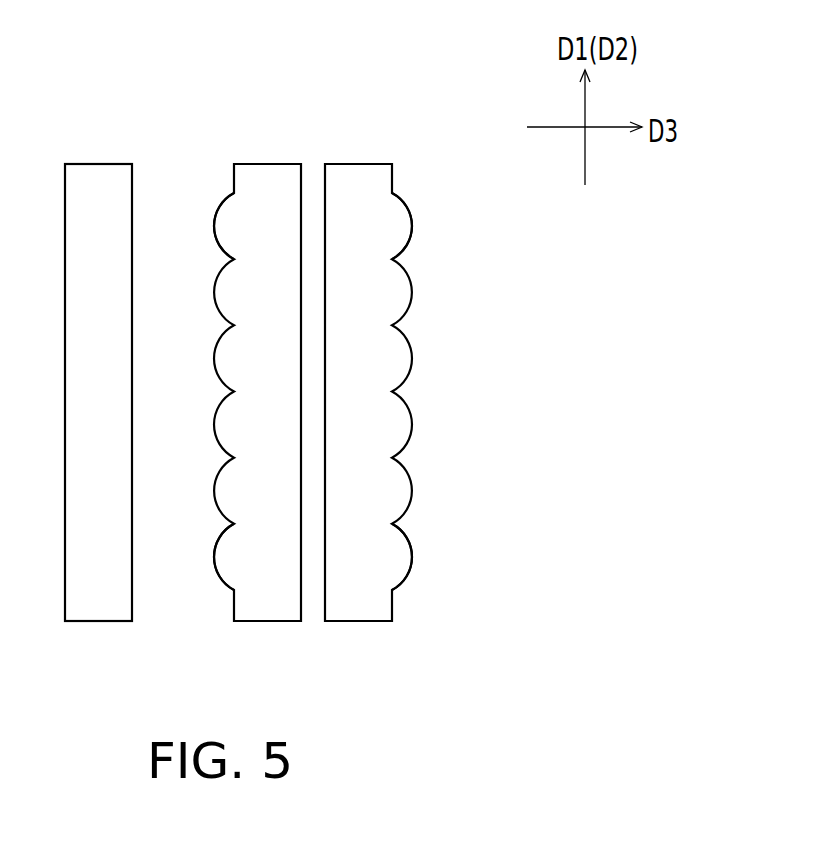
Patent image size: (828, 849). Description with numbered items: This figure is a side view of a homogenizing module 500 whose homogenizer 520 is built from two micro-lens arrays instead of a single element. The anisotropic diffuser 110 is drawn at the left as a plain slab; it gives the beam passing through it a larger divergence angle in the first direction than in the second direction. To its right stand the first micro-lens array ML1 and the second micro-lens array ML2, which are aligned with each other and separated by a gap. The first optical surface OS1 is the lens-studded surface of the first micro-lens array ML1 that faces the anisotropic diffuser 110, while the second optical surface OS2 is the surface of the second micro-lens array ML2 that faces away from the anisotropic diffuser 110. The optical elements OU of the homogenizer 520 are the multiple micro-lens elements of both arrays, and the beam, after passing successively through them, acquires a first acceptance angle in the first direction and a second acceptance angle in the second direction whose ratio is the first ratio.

The anisotropic diffuser 110 is at (115, 163).
The first micro-lens array ML1 is at (272, 163).
The second micro-lens array ML2 is at (362, 163).
The optical elements OU is at (203, 223).
The first optical surface OS1 is at (217, 560).
The second optical surface OS2 is at (410, 558).
The homogenizer 520 is at (385, 380).
The homogenizing module 500 is at (348, 402).